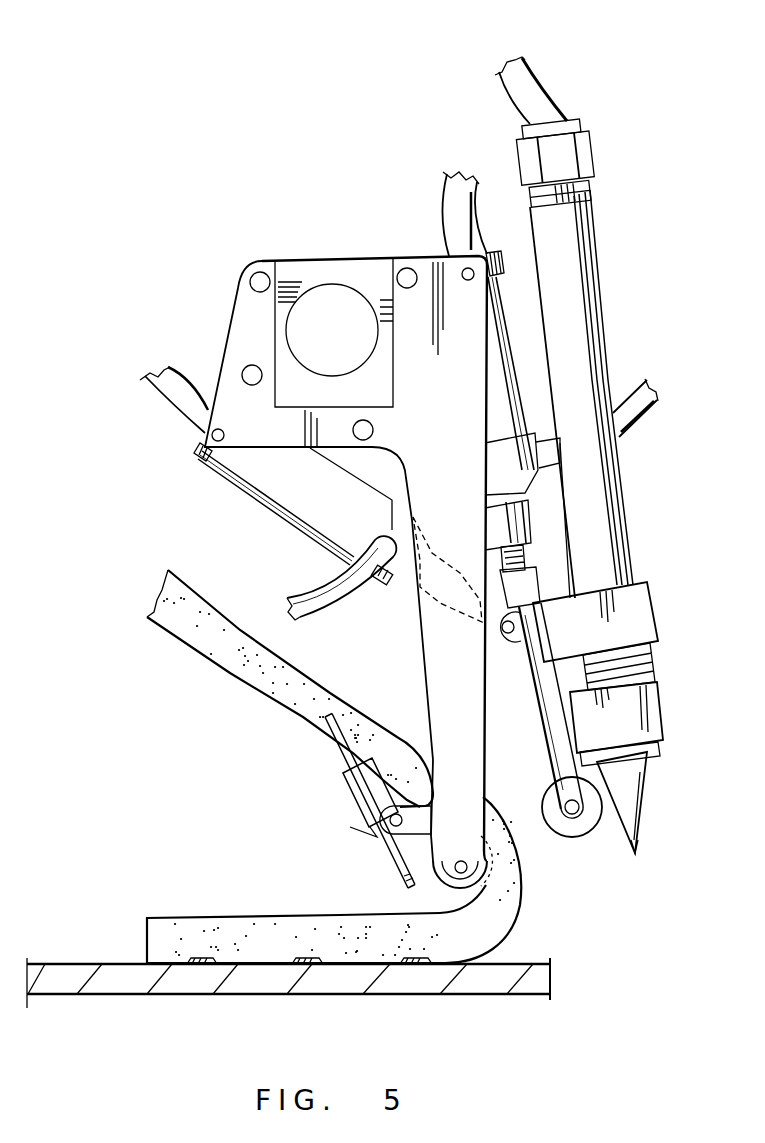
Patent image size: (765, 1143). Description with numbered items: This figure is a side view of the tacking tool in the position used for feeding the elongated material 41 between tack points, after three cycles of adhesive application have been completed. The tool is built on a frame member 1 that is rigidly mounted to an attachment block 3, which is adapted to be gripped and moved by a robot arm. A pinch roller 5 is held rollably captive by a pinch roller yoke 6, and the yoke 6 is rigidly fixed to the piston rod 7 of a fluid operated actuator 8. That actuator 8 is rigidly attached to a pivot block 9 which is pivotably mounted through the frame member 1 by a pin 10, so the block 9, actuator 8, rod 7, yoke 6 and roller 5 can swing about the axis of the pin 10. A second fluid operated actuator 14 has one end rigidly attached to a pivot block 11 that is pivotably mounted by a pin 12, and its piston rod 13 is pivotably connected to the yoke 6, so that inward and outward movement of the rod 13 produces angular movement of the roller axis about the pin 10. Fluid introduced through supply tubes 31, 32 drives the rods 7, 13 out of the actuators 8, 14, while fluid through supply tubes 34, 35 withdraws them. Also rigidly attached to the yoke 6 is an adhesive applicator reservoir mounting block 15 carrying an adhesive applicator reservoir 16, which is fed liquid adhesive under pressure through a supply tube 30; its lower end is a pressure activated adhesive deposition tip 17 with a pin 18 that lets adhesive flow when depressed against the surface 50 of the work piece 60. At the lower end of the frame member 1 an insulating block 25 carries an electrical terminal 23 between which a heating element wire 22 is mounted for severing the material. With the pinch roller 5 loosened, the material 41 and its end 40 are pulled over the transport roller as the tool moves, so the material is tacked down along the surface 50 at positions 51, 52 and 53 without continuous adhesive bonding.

The frame member 1 is at (433, 415).
The attachment block 3 is at (294, 275).
The pinch roller 5 is at (578, 832).
The pinch roller yoke 6 is at (545, 632).
The piston rod 7 is at (523, 557).
The fluid operated actuator 8 is at (490, 407).
The pivot block 9 is at (497, 252).
The pin 10 is at (462, 268).
The pivot block 11 is at (197, 460).
The pin 12 is at (205, 434).
The piston rod 13 is at (500, 645).
The fluid operated actuator 14 is at (273, 478).
The adhesive applicator reservoir mounting block 15 is at (640, 620).
The adhesive applicator reservoir 16 is at (596, 492).
The pressure activated adhesive deposition tip 17 is at (643, 782).
The pin 18 is at (640, 855).
The heating element wire 22 is at (412, 890).
The electrical terminal 23 is at (400, 867).
The insulating block 25 is at (350, 818).
The supply tube 30 is at (537, 97).
The supply tube 31 is at (460, 187).
The supply tube 32 is at (157, 370).
The supply tube 34 is at (652, 402).
The supply tube 35 is at (330, 587).
The end of elongated material 40 is at (147, 935).
The elongated material 41 is at (213, 643).
The surface 50 is at (42, 962).
The position 51 is at (203, 968).
The position 52 is at (312, 968).
The position 53 is at (415, 968).
The work piece 60 is at (523, 983).